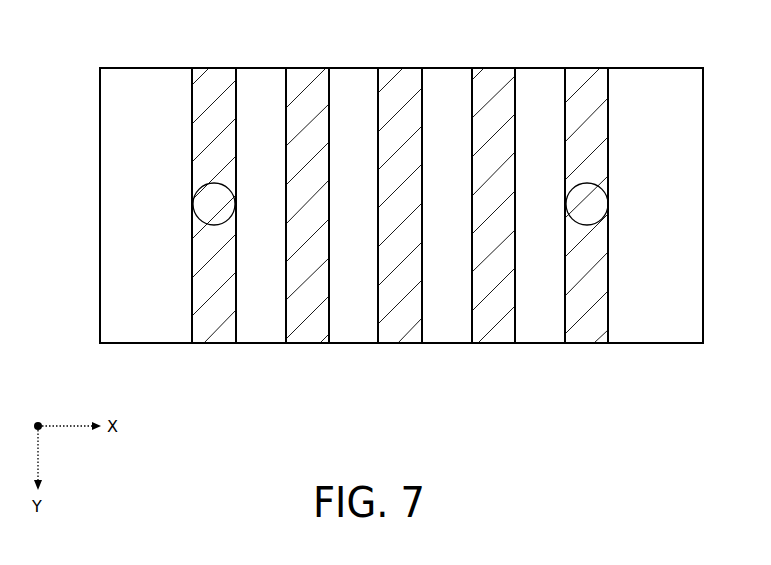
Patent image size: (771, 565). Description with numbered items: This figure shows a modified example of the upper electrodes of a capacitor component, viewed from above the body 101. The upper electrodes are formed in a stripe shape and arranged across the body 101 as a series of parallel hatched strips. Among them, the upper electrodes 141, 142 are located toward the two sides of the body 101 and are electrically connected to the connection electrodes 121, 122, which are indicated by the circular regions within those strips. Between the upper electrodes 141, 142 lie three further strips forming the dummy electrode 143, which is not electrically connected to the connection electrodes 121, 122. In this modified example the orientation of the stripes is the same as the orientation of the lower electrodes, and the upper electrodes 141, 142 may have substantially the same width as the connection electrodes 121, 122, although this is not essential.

The body 101 is at (141, 80).
The upper electrode 141 is at (216, 76).
The upper electrode 142 is at (588, 76).
The dummy electrode 143 is at (495, 78).
The connection electrode 121 is at (216, 226).
The connection electrode 122 is at (587, 226).